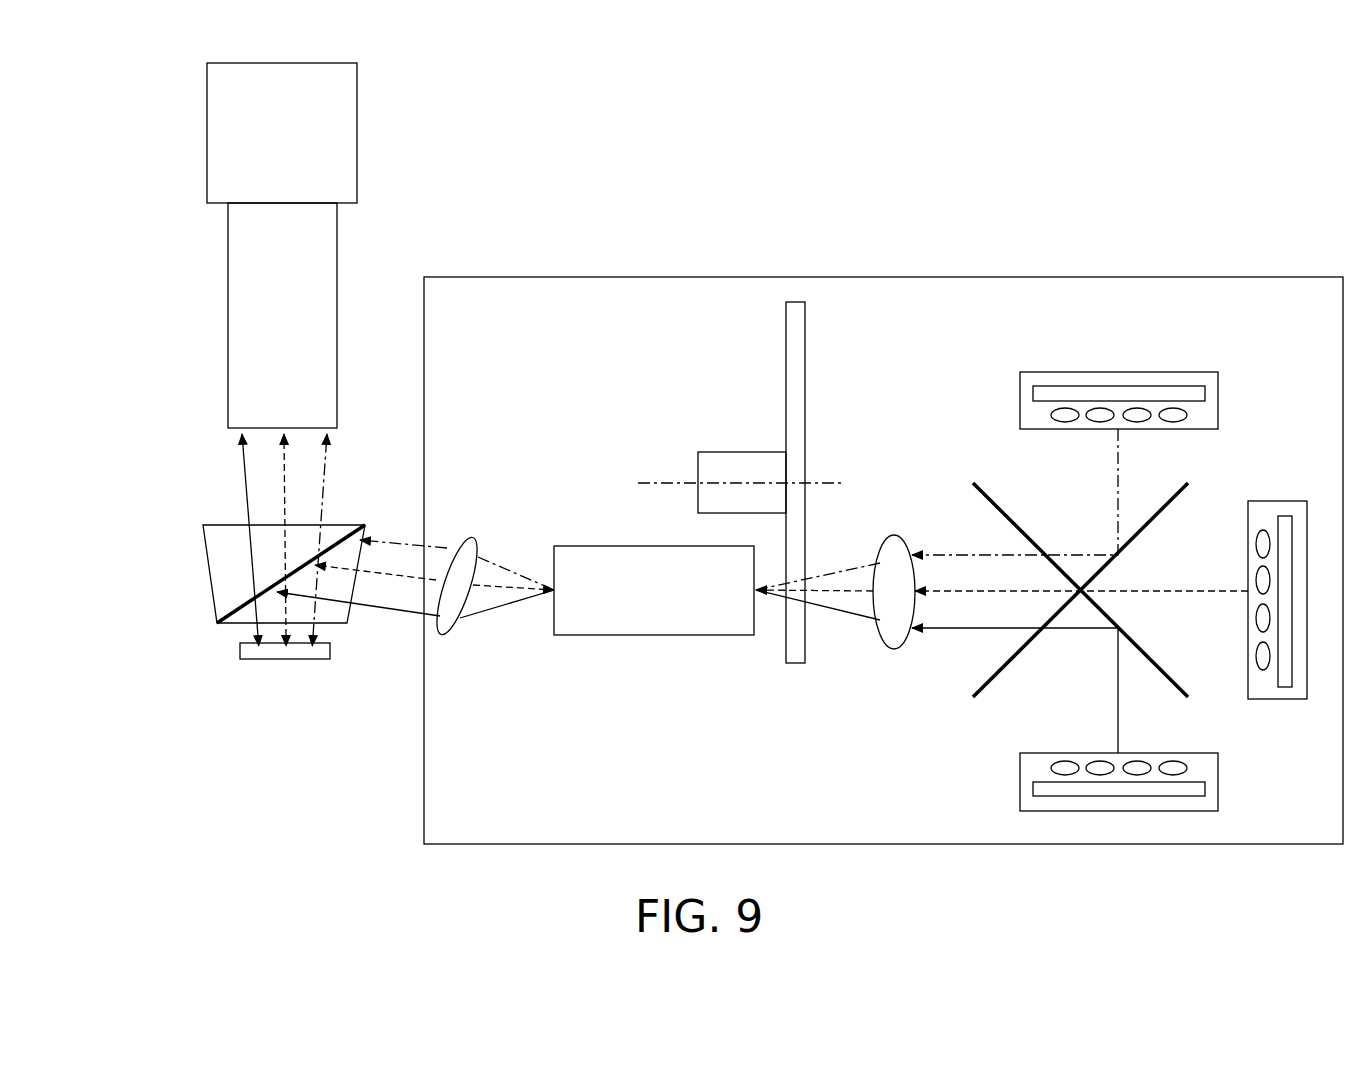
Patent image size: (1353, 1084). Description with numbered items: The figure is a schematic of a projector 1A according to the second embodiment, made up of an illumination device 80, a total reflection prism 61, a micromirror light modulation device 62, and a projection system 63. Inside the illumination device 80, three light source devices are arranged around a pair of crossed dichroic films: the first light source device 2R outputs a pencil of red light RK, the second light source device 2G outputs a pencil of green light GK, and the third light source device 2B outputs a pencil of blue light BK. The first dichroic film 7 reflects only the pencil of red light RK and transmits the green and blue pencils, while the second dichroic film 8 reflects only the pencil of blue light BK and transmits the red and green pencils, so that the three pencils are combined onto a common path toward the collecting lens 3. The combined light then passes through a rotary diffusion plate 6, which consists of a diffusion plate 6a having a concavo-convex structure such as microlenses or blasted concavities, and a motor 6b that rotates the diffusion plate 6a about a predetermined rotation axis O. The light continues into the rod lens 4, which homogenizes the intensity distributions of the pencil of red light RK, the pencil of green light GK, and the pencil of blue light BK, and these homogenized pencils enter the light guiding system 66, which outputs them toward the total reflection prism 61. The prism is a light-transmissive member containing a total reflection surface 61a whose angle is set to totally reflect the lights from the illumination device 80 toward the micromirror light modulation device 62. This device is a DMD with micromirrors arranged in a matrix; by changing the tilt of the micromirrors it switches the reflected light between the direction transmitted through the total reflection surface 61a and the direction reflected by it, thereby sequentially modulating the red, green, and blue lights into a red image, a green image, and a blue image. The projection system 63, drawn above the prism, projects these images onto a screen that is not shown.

The projector 1A is at (918, 178).
The illumination device 80 is at (1172, 277).
The projection system 63 is at (170, 150).
The total reflection prism 61 is at (218, 555).
The total reflection surface 61a is at (232, 618).
The micromirror light modulation device 62 is at (292, 660).
The light guiding system 66 is at (455, 636).
The rod lens 4 is at (631, 626).
The rotary diffusion plate 6 is at (785, 534).
The diffusion plate 6a is at (798, 386).
The motor 6b is at (725, 460).
The collecting lens 3 is at (892, 640).
The first dichroic film 7 is at (1165, 667).
The second dichroic film 8 is at (1165, 505).
The third light source device 2B is at (1089, 381).
The second light source device 2G is at (1281, 593).
The first light source device 2R is at (1114, 787).
The rotation axis O is at (657, 482).
The pencil of red light RK is at (397, 540).
The pencil of green light GK is at (372, 578).
The pencil of blue light BK is at (401, 618).